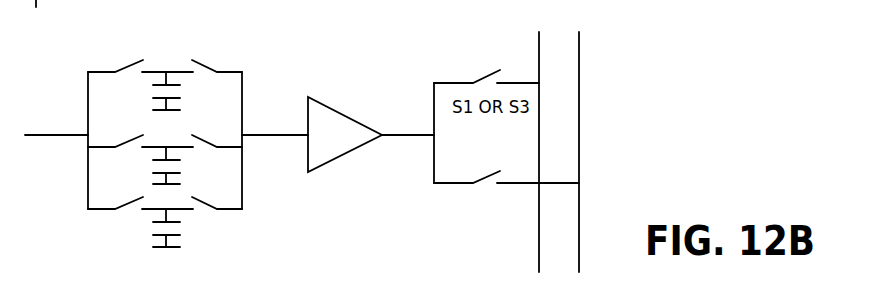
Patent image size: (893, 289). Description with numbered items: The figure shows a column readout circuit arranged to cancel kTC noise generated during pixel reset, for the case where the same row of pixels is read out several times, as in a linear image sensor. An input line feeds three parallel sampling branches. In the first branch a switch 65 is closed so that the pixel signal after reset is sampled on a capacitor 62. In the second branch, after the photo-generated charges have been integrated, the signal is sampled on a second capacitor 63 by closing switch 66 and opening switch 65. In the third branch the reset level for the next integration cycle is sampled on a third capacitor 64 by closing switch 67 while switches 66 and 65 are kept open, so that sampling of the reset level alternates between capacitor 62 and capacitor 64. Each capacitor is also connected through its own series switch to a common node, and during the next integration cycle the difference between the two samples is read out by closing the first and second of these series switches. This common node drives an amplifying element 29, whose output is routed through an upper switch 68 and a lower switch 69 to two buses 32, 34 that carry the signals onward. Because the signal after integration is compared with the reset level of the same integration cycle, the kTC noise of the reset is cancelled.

The amplifying element 29 is at (338, 125).
The bus 32 is at (538, 42).
The bus 34 is at (582, 130).
The capacitor 62 is at (177, 90).
The second capacitor 63 is at (177, 164).
The third capacitor 64 is at (177, 228).
The switch 65 is at (117, 63).
The switch 66 is at (113, 135).
The switch 67 is at (110, 227).
The switch S1 or S3 68 is at (483, 72).
The switch S2 69 is at (465, 202).